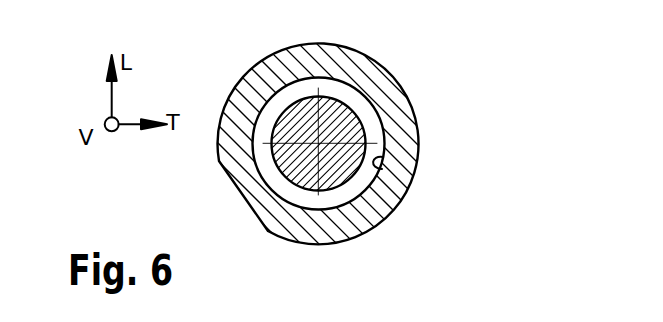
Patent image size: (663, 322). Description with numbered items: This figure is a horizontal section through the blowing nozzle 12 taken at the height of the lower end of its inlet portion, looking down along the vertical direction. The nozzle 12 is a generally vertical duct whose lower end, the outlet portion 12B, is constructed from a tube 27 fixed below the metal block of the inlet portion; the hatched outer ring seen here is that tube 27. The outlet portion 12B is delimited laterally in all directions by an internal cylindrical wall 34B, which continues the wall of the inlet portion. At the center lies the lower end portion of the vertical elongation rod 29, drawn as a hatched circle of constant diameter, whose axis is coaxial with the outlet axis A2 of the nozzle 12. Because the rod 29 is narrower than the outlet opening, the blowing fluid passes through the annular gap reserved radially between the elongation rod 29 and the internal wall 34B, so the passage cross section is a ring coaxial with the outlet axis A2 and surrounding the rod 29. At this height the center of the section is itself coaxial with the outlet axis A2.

The blowing nozzle 12 is at (319, 154).
The outlet portion 12B is at (352, 195).
The tube 27 is at (400, 167).
The elongation rod 29 is at (330, 102).
The internal wall 34B is at (380, 166).
The outlet axis A2 is at (320, 141).